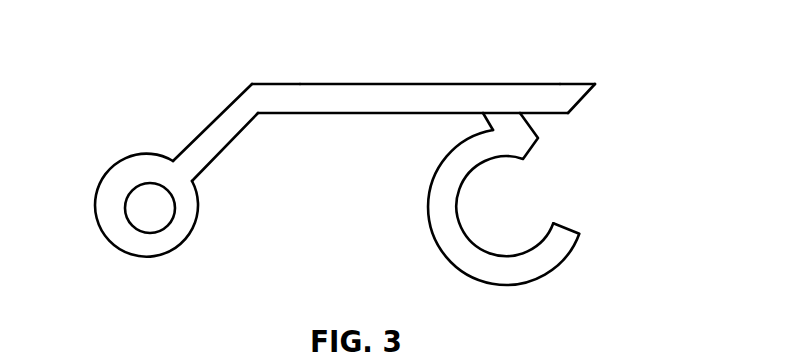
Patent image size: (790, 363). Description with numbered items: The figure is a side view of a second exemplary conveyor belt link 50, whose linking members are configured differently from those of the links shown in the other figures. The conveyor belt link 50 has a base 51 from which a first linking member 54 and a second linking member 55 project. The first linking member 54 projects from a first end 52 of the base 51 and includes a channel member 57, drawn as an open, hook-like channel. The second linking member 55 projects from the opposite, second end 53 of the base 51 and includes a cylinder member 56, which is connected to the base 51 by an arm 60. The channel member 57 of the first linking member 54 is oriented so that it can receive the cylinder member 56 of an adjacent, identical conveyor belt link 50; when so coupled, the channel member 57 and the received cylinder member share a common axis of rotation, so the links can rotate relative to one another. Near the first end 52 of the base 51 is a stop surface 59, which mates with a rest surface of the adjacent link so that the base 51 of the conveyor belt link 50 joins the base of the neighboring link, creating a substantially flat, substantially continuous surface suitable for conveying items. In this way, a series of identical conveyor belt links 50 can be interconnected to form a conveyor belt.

The conveyor belt link 50 is at (483, 48).
The base 51 is at (387, 92).
The first end 52 is at (600, 68).
The second end 53 is at (225, 95).
The first linking member 54 is at (553, 188).
The second linking member 55 is at (93, 170).
The cylinder member 56 is at (112, 242).
The channel member 57 is at (433, 242).
The stop surface 59 is at (583, 97).
The arm 60 is at (218, 142).